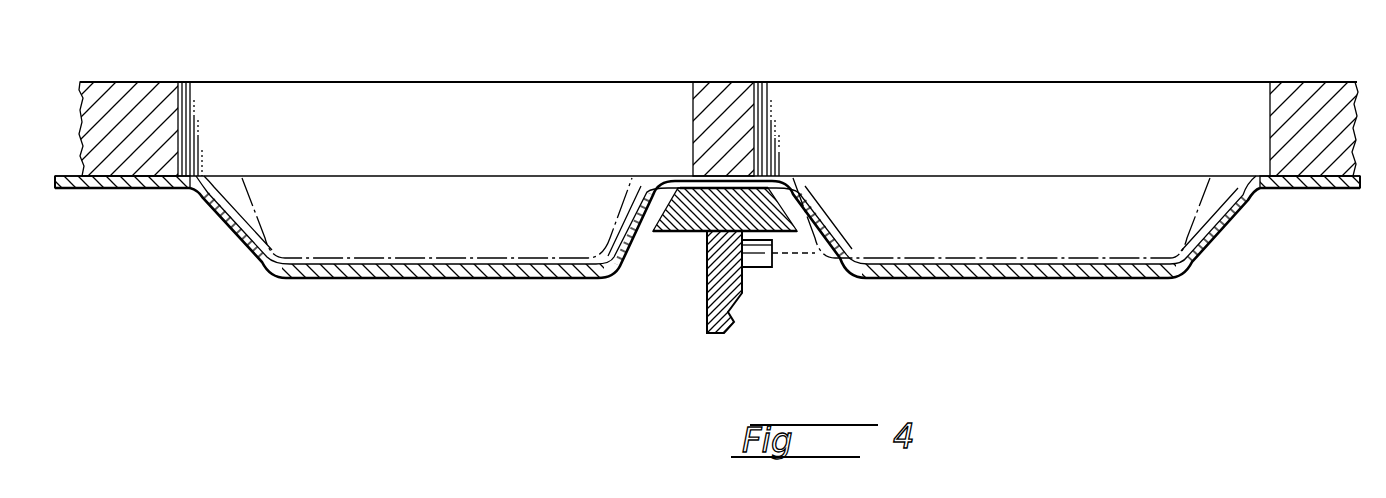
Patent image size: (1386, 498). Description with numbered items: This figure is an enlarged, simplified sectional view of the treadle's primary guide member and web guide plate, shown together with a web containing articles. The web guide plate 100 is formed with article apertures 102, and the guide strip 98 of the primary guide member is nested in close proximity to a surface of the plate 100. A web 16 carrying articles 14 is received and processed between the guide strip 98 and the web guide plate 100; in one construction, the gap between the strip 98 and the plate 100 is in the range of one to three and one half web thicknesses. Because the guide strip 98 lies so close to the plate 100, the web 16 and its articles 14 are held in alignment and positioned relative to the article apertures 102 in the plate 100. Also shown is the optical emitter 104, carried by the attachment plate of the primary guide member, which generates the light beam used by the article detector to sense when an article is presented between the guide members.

The articles 14 is at (1217, 242).
The web 16 is at (1313, 193).
The guide strip 98 is at (678, 300).
The web guide plate 100 is at (135, 80).
The article apertures 102 is at (757, 98).
The optical emitter 104 is at (757, 268).